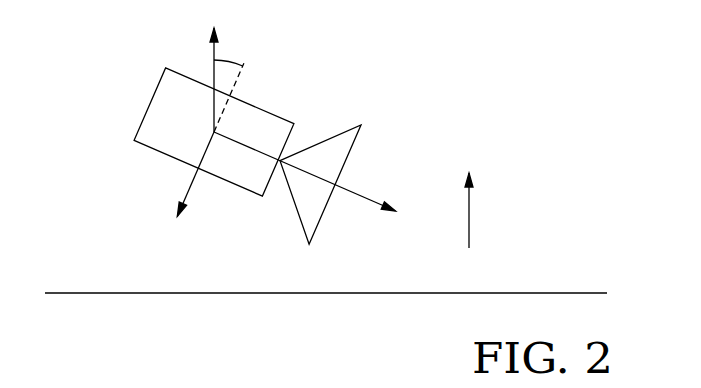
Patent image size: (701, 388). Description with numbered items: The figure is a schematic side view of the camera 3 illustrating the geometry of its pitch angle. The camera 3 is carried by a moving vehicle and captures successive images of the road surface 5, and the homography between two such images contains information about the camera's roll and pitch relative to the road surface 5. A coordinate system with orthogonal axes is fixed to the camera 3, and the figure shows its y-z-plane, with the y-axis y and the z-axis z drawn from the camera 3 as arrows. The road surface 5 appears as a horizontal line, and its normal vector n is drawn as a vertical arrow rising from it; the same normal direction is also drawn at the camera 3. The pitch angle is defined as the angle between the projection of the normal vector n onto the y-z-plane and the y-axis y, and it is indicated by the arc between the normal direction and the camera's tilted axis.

The camera 3 is at (216, 144).
The road surface 5 is at (553, 292).
The normal vector of the road surface n is at (330, 134).
The y-axis y is at (195, 186).
The z-axis z is at (305, 186).